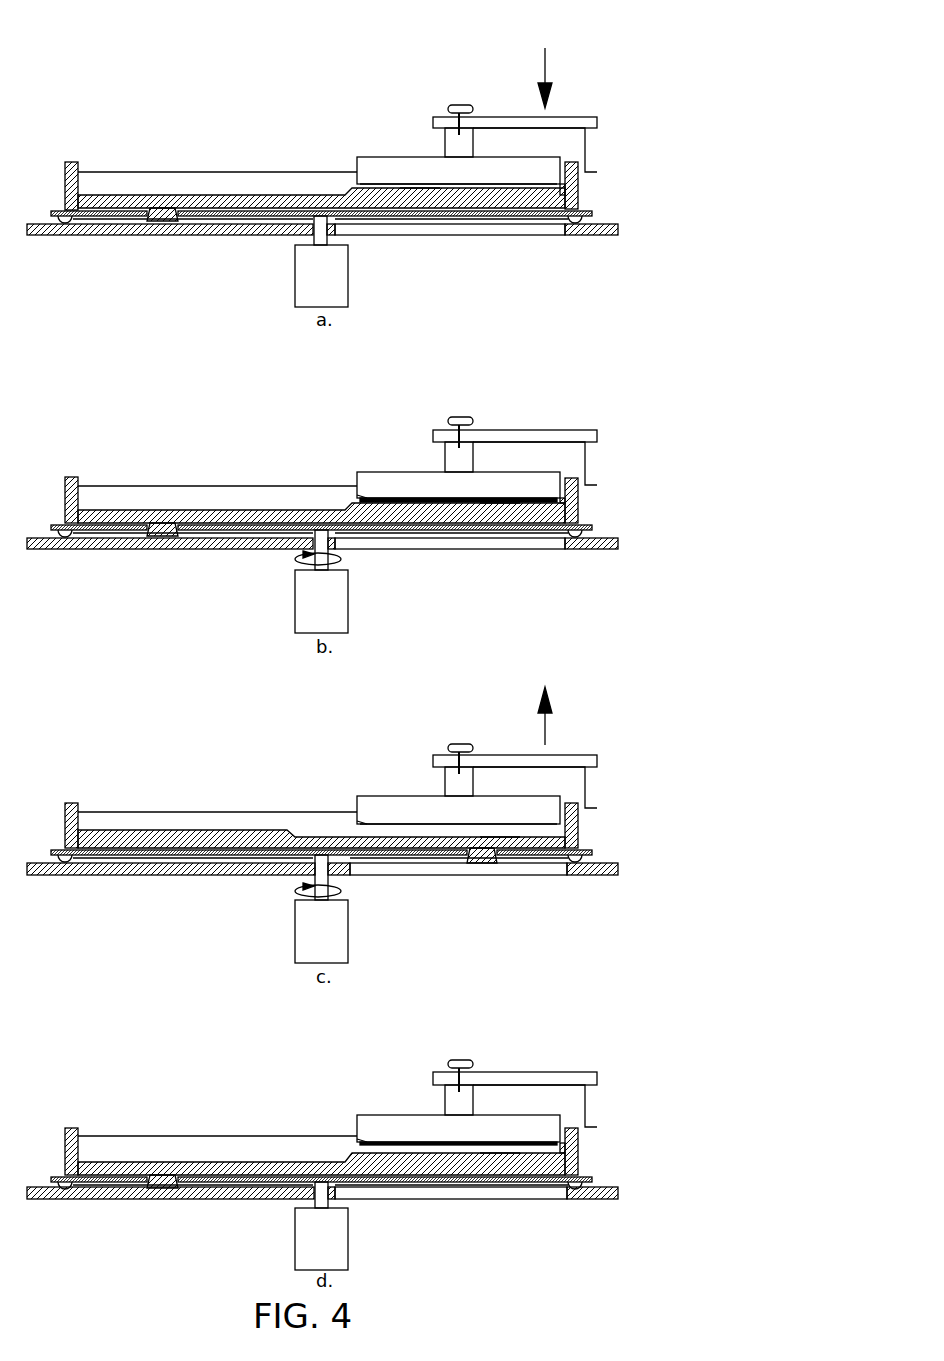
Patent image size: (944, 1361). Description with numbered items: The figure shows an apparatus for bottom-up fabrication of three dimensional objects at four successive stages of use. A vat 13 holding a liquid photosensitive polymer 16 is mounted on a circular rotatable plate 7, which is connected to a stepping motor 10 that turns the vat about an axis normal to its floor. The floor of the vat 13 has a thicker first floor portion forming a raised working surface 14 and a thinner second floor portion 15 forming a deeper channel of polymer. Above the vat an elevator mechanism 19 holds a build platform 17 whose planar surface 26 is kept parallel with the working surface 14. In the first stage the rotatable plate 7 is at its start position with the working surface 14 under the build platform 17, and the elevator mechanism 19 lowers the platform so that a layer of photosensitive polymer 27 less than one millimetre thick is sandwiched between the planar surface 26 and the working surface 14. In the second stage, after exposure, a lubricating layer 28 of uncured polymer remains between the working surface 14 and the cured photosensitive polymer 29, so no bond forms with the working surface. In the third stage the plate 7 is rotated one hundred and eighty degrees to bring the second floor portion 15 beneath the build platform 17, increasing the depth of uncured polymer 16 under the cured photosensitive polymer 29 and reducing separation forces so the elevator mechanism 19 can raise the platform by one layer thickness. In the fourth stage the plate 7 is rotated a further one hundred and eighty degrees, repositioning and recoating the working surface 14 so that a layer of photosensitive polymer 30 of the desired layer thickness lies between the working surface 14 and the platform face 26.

The rotatable plate 7 is at (57, 210).
The stepping motor 10 is at (295, 270).
The vat 13 is at (73, 162).
The working surface 14 is at (460, 193).
The second floor portion 15 is at (160, 200).
The photosensitive polymer 16 is at (120, 170).
The build platform 17 is at (375, 160).
The elevator mechanism 19 is at (510, 115).
The planar surface 26 is at (460, 183).
The layer of photosensitive polymer 27 is at (420, 186).
The lubricating layer 28 is at (497, 503).
The cured photosensitive polymer 29 is at (365, 497).
The layer of photosensitive polymer 30 is at (495, 1147).